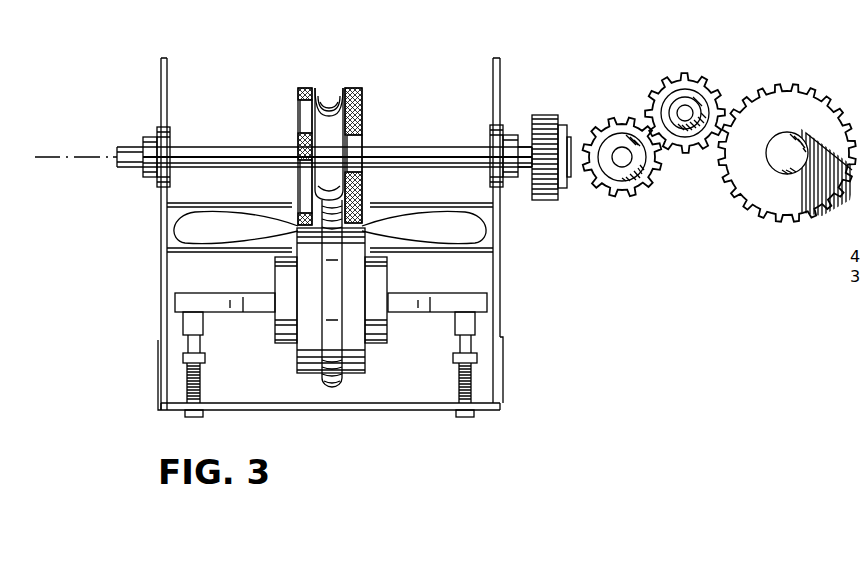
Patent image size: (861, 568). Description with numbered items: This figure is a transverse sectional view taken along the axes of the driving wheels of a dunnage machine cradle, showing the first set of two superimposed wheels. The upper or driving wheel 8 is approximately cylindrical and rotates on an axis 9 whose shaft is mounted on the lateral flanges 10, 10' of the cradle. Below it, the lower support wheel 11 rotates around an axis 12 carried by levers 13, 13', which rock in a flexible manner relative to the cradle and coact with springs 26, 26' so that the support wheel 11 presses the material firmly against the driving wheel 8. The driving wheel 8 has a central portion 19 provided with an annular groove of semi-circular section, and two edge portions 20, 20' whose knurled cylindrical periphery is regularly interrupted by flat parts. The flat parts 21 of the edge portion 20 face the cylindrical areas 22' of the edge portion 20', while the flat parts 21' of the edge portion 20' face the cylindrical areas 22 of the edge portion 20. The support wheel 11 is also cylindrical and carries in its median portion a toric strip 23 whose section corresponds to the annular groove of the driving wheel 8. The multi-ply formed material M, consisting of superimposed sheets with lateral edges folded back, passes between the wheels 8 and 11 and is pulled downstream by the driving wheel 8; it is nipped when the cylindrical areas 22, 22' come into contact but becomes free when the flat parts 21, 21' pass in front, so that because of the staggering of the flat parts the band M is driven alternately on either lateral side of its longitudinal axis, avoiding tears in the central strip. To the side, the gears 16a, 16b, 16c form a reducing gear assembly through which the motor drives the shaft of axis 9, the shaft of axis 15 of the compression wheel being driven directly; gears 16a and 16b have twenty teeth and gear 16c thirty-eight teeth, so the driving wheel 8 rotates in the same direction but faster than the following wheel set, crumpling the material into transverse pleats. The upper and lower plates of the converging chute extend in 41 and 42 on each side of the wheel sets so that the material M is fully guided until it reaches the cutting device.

The driving wheel 8 is at (350, 88).
The axis 9 is at (117, 152).
The lateral flange 10 is at (177, 218).
The lateral flange 10' is at (513, 214).
The support wheel 11 is at (350, 373).
The axis 12 is at (233, 292).
The lever 13 is at (156, 337).
The lever 13' is at (504, 337).
The axis 15 is at (787, 160).
The gear 16a is at (605, 120).
The gear 16b is at (695, 75).
The gear 16c is at (800, 86).
The central portion 19 is at (328, 108).
The edge portion 20 is at (286, 145).
The edge portion 20' is at (372, 143).
The flat part 21 is at (281, 156).
The flat part 21' is at (404, 163).
The cylindrical area 22 is at (256, 164).
The cylindrical area 22' is at (381, 152).
The toric strip 23 is at (313, 373).
The spring 26 is at (151, 390).
The spring 26' is at (507, 390).
The plate extension 41 is at (190, 203).
The plate extension 42 is at (437, 252).
The multi-ply formed material M is at (487, 220).